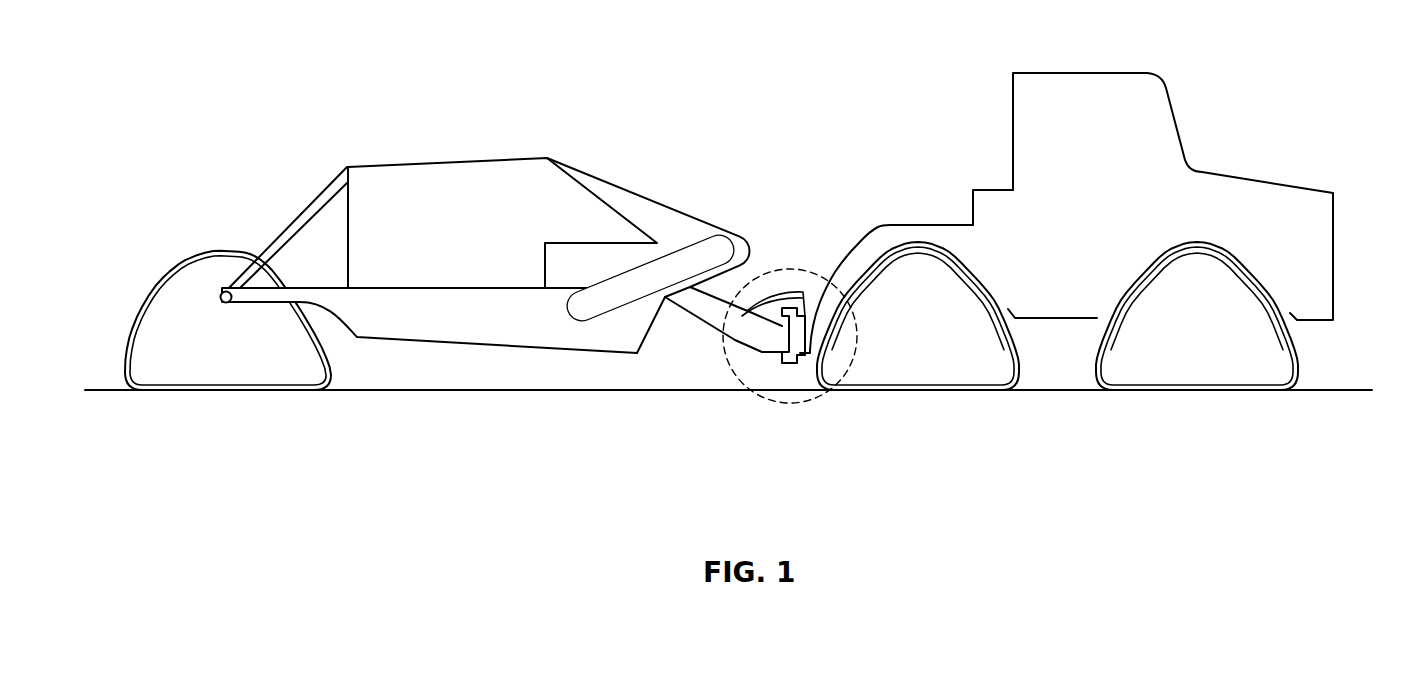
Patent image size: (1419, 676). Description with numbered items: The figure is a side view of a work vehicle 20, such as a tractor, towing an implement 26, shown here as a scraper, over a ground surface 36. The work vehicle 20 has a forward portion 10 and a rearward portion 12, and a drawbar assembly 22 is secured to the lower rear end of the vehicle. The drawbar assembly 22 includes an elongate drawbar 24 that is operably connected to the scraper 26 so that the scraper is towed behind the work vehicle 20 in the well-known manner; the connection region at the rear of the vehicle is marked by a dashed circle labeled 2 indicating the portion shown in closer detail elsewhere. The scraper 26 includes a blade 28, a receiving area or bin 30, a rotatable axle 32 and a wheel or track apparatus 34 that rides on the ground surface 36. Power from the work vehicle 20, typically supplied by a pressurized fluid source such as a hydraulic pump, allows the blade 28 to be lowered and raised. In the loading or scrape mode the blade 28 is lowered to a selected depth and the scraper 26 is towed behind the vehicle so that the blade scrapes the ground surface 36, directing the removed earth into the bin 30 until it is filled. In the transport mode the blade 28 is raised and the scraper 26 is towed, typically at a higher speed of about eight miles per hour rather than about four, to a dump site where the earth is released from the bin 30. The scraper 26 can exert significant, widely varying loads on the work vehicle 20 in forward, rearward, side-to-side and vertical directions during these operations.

The forward portion 10 is at (1337, 257).
The rearward portion 12 is at (857, 242).
The work vehicle 20 is at (1163, 123).
The drawbar assembly 22 is at (804, 380).
The drawbar 24 is at (802, 312).
The implement 26 is at (386, 118).
The blade 28 is at (637, 357).
The receiving area or bin 30 is at (463, 330).
The rotatable axle 32 is at (227, 313).
The wheel or track apparatus 34 is at (175, 378).
The ground surface 36 is at (730, 394).
The detail view region (FIG. 2) 2 is at (723, 350).